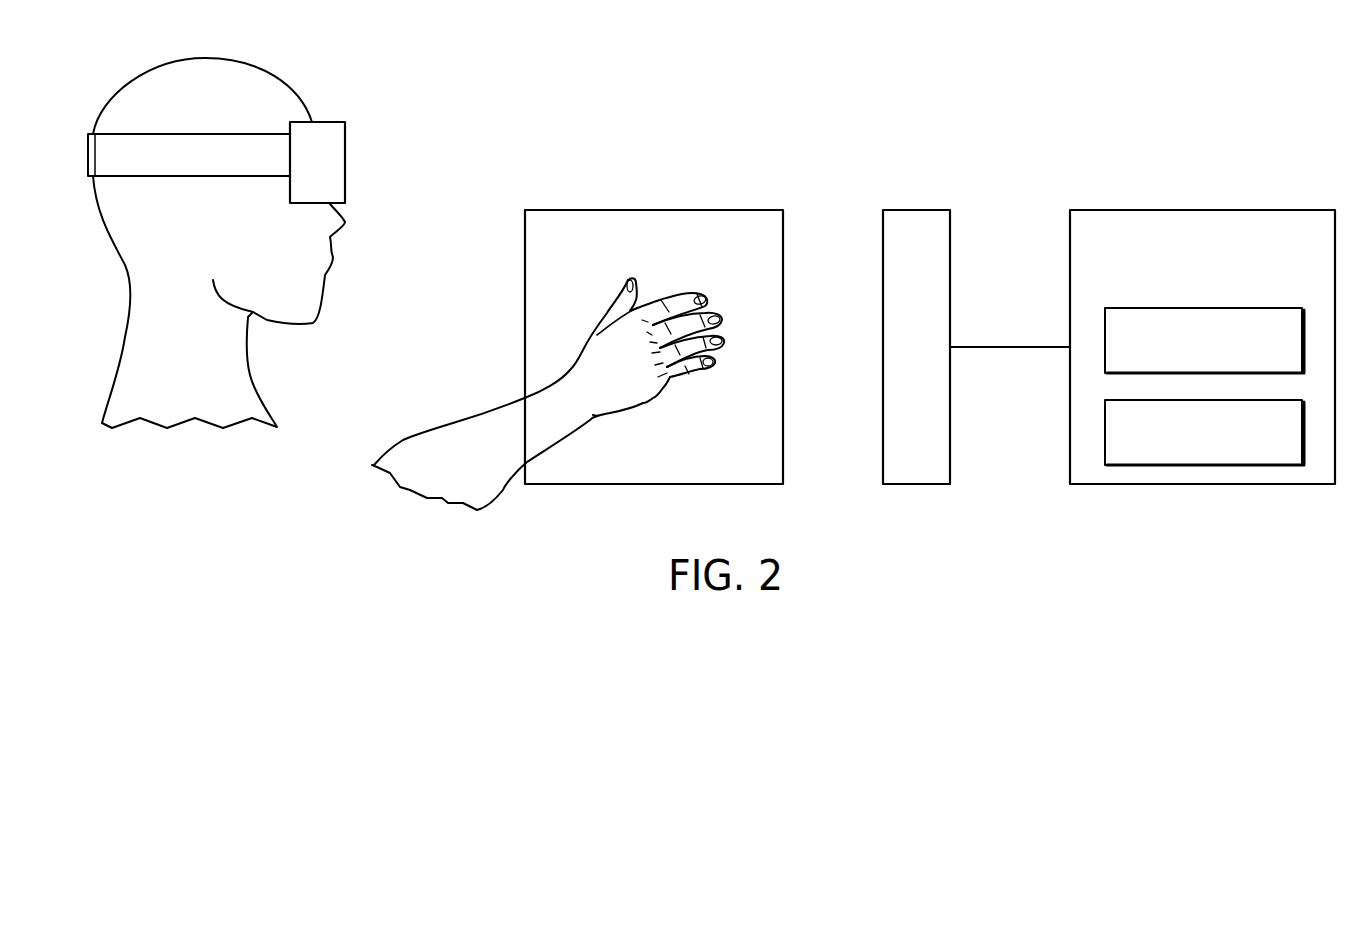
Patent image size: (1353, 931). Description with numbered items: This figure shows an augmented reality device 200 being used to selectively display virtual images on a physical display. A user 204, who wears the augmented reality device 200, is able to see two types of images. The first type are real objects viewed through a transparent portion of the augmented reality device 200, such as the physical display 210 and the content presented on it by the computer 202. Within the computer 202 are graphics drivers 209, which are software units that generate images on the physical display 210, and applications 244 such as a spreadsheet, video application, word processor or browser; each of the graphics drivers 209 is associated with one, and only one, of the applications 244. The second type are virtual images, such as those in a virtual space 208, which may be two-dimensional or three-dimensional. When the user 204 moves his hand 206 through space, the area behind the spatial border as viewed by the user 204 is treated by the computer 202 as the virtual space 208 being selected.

The augmented reality device 200 is at (345, 165).
The computer 202 is at (1177, 294).
The user 204 is at (183, 258).
The hand 206 is at (653, 398).
The virtual space 208 is at (683, 248).
The graphics drivers 209 is at (1177, 367).
The physical display 210 is at (938, 362).
The applications 244 is at (1177, 457).